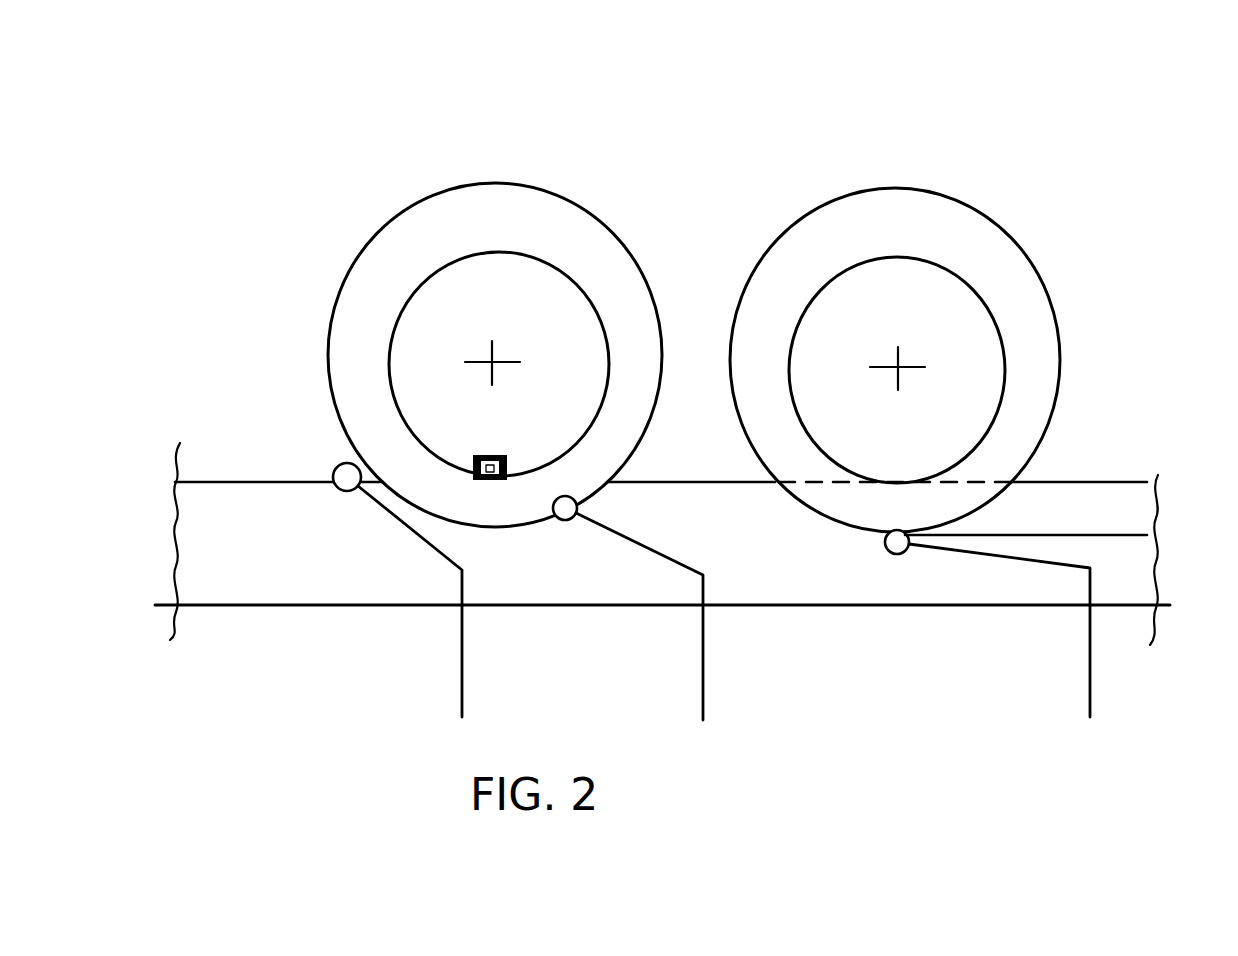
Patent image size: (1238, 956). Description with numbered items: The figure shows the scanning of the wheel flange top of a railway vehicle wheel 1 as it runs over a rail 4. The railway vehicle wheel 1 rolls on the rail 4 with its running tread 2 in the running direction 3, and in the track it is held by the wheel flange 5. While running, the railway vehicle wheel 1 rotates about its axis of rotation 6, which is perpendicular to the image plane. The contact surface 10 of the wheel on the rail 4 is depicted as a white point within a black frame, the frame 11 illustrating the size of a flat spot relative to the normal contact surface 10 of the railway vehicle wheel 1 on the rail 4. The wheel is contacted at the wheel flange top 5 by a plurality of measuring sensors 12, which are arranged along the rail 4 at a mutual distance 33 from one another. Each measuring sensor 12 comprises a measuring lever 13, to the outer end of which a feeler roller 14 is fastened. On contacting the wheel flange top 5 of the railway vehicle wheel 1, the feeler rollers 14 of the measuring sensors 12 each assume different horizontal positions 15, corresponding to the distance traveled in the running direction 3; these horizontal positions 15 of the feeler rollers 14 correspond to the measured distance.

The railway vehicle wheel 1 is at (388, 227).
The running tread 2 is at (470, 250).
The running direction 3 is at (1226, 375).
The rail 4 is at (238, 520).
The wheel flange 5 is at (600, 208).
The axis of rotation 6 is at (494, 360).
The contact surface 10 is at (497, 455).
The flat spot 11 is at (473, 457).
The measuring sensor 12 is at (374, 525).
The measuring lever 13 is at (417, 540).
The feeler roller 14 is at (337, 463).
The measured distance 15 is at (1133, 590).
The mutual distance of the measuring sensors 33 is at (701, 687).